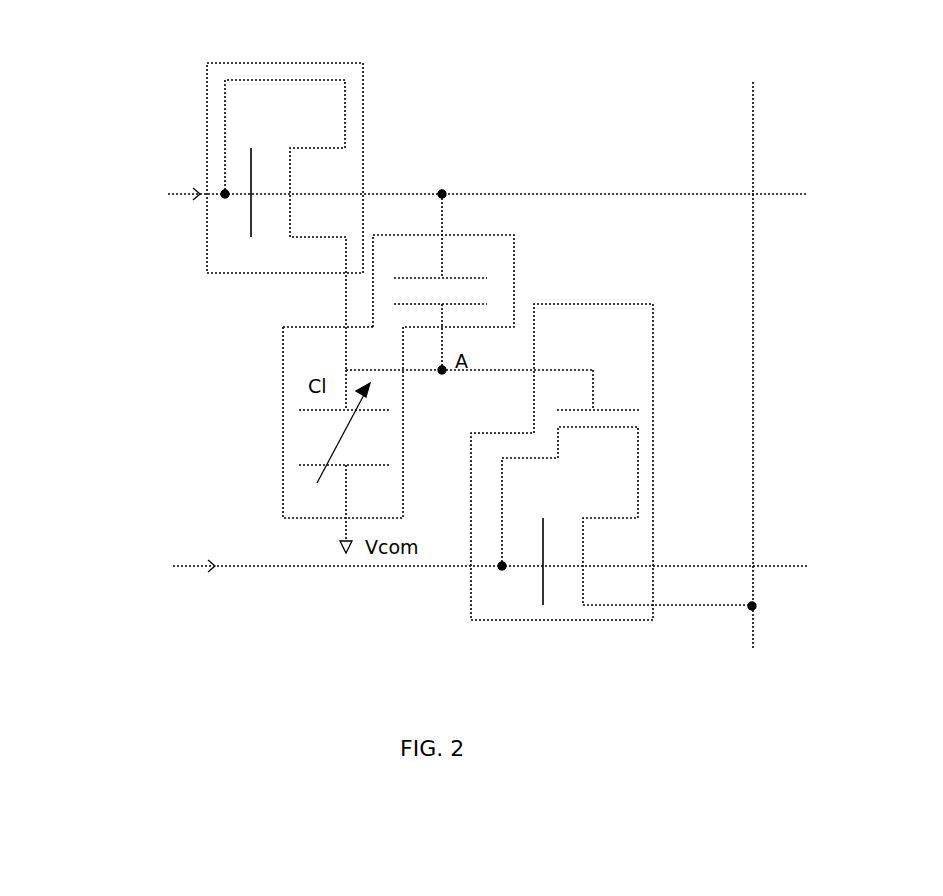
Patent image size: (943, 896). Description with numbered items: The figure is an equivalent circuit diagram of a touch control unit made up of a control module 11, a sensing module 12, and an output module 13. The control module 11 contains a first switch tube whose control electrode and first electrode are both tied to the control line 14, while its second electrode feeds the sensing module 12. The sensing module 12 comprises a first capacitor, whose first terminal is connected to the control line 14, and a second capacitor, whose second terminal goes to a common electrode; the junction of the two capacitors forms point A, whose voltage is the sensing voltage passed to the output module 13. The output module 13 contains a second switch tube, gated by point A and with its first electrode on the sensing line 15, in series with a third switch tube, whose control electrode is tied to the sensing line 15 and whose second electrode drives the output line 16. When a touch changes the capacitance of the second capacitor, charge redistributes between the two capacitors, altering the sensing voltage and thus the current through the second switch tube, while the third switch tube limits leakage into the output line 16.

The control module 11 is at (272, 63).
The sensing module 12 is at (514, 270).
The output module 13 is at (653, 345).
The control line 14 is at (778, 194).
The sensing line 15 is at (778, 566).
The output line 16 is at (753, 100).